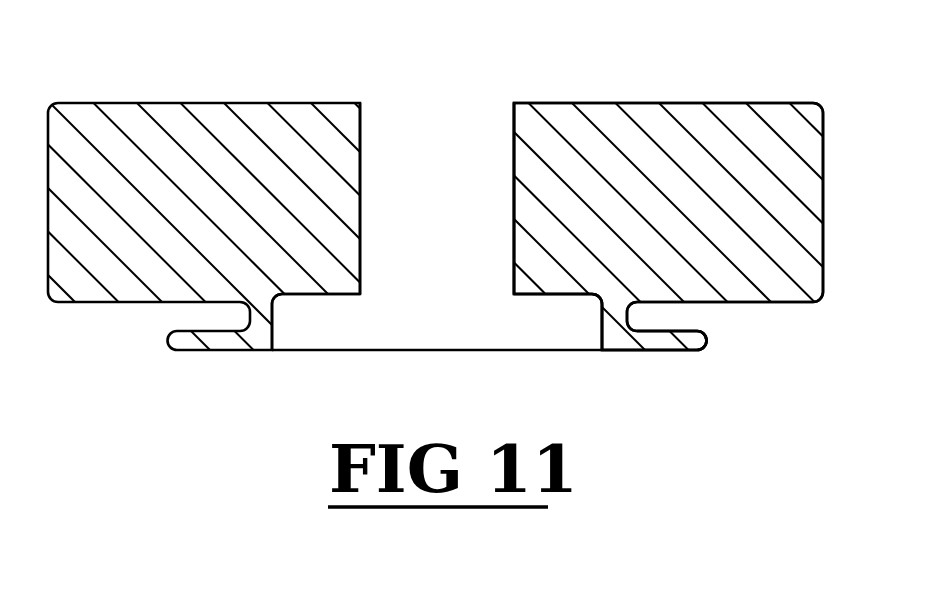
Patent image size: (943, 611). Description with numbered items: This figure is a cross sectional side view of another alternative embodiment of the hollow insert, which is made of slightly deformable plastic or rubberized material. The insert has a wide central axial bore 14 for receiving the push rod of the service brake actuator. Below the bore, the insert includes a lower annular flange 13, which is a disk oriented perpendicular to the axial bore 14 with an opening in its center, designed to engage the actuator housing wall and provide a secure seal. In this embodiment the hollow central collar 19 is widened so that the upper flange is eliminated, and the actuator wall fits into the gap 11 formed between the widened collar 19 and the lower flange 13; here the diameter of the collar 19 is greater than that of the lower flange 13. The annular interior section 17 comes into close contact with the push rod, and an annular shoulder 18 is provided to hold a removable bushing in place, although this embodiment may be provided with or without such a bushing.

The grommet section 11 is at (610, 317).
The lower annular flange 13 is at (675, 340).
The central axial bore 14 is at (467, 113).
The annular interior section 17 is at (318, 287).
The annular shoulder 18 is at (803, 126).
The hollow central collar 19 is at (605, 128).